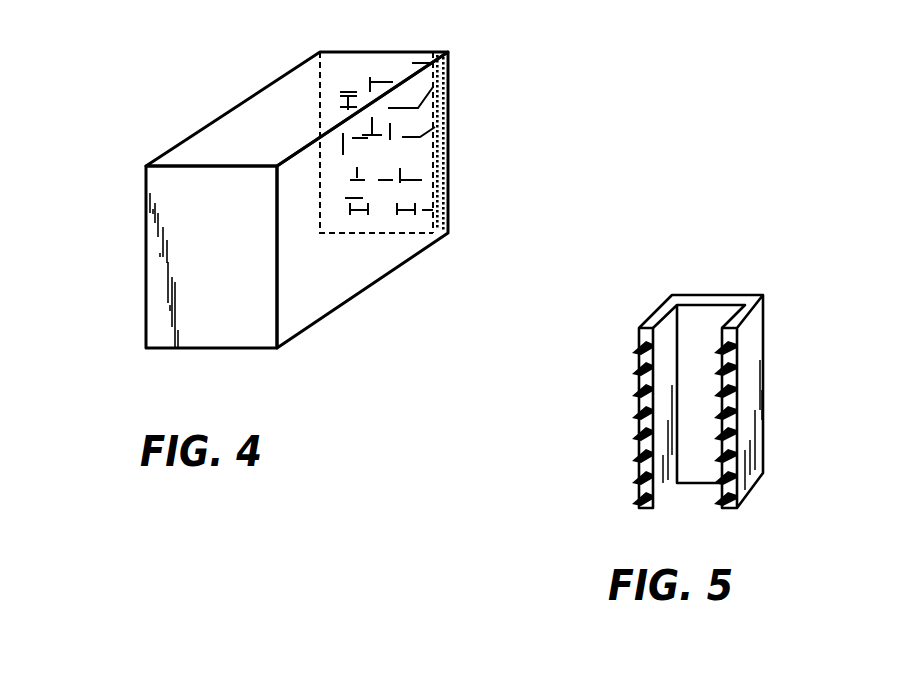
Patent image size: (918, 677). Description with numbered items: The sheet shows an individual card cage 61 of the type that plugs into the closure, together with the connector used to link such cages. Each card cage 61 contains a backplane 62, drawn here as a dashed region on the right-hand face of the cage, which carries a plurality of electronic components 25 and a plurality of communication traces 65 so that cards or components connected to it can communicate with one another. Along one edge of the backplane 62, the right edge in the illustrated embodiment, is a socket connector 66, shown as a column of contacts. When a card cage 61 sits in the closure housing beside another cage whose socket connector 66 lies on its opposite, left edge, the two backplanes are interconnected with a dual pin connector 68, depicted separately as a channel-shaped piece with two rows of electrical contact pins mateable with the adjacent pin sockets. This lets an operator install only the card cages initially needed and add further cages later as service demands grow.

In FIG. 4, the card cage 61 is at (147, 221).
In FIG. 4, the backplane 62 is at (347, 87).
In FIG. 4, the communication traces 65 is at (448, 82).
In FIG. 4, the electronic components 25 is at (448, 122).
In FIG. 4, the socket connector 66 is at (447, 175).
In FIG. 5, the dual pin connector 68 is at (755, 340).